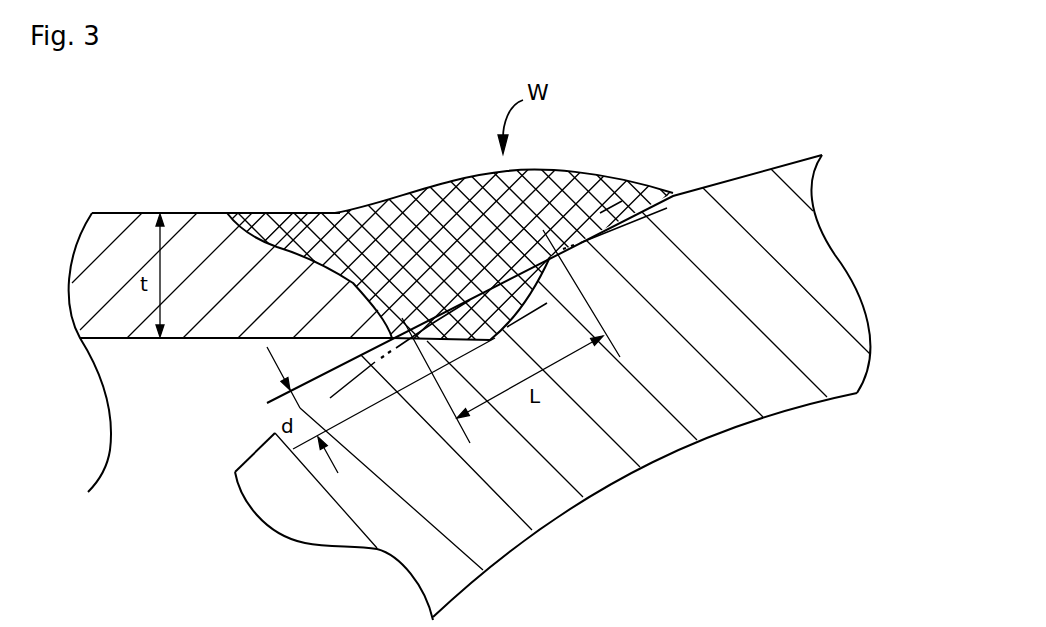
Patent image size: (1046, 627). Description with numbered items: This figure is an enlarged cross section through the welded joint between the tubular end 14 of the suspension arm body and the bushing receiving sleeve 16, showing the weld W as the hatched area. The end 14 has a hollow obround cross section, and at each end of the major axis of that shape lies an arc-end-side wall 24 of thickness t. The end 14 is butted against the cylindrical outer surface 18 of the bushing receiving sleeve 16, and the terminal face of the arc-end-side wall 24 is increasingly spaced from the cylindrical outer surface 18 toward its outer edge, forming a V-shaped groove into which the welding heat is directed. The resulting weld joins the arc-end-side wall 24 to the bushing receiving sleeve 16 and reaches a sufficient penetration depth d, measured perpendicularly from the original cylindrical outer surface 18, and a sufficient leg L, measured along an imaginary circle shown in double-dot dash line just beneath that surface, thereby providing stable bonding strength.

The end 14 is at (124, 237).
The bushing receiving sleeve 16 is at (614, 519).
The cylindrical outer surface 18 is at (711, 182).
The arc-end-side wall 24 is at (282, 193).